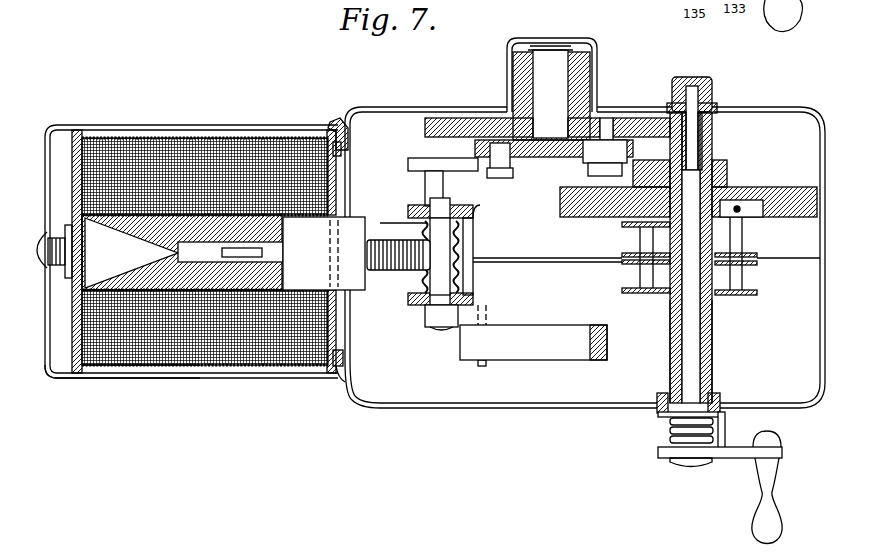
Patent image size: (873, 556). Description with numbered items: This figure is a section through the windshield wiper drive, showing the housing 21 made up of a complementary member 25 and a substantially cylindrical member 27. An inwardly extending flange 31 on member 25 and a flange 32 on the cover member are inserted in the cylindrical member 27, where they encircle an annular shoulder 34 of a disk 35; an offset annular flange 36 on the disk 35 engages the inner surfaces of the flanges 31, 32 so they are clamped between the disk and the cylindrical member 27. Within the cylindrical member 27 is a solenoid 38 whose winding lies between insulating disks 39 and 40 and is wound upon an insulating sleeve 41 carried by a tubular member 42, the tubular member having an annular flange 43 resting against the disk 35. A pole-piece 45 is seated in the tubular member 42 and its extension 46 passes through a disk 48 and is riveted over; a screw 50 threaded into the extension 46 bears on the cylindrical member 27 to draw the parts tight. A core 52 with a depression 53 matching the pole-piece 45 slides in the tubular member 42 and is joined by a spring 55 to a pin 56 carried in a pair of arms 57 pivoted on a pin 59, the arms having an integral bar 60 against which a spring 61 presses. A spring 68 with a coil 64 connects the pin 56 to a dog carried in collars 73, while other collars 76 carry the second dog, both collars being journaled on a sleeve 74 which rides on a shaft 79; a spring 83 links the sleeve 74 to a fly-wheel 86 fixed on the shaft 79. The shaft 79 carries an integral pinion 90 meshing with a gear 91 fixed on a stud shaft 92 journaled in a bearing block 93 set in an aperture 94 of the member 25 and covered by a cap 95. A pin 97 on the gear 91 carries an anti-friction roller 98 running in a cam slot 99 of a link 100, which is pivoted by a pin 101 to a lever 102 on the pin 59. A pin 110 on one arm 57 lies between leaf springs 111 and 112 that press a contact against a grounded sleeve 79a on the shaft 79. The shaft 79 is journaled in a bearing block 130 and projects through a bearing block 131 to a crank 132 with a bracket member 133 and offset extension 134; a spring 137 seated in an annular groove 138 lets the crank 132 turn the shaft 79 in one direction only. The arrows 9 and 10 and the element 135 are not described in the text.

The cylindrical member 27 is at (146, 126).
The disk 48 is at (58, 378).
The insulating disk 39 is at (78, 372).
The solenoid 38 is at (215, 155).
The depression 53 is at (173, 217).
The pole-piece 45 is at (128, 267).
The insulating sleeve 41 is at (160, 290).
The tubular member 42 is at (196, 292).
The core 52 is at (240, 278).
The screw 50 is at (47, 238).
The extension 46 is at (62, 278).
The annular shoulder 34 is at (322, 152).
The disk 35 is at (336, 320).
The annular flange 43 is at (337, 305).
The flange 31 is at (338, 126).
The flange 32 is at (344, 352).
The insulating disk 40 is at (330, 374).
The housing 21 is at (360, 112).
The housing member 25 is at (371, 107).
The offset annular flange 36 is at (348, 362).
The bearing block 93 is at (597, 58).
The stud shaft 92 is at (543, 83).
The cap 95 is at (508, 48).
The link 100 is at (516, 146).
The gear 91 is at (640, 127).
The aperture 94 is at (606, 117).
The anti-friction roller 98 is at (582, 159).
The pin 101 is at (503, 180).
The pin 97 is at (595, 176).
The lever 102 is at (470, 171).
The cam slot 99 is at (651, 173).
The bearing block 130 is at (713, 83).
The pinion 90 is at (713, 150).
The shaft 79 is at (705, 336).
The sleeve 79a is at (720, 345).
The fly-wheel 86 is at (562, 200).
The spring 83 is at (745, 205).
The sleeve 74 is at (739, 206).
The coil 64 is at (631, 227).
The direction arrow 10 is at (610, 236).
The collars 73 is at (749, 227).
The collars 76 is at (751, 263).
The direction arrow 9 is at (613, 298).
The spring 68 is at (576, 263).
The arms 57 is at (412, 207).
The pin 56 is at (446, 233).
The bar 60 is at (476, 245).
The spring 61 is at (462, 282).
The pin 59 is at (445, 328).
The spring 55 is at (400, 269).
The pin 110 is at (484, 322).
The leaf spring 111 is at (560, 335).
The leaf spring 112 is at (608, 345).
The bearing block 131 is at (716, 395).
The offset extension 134 is at (660, 415).
The annular groove 138 is at (670, 430).
The spring 137 is at (668, 440).
The bracket member 133 is at (727, 428).
The crank 132 is at (730, 459).
The nut 135 is at (672, 465).